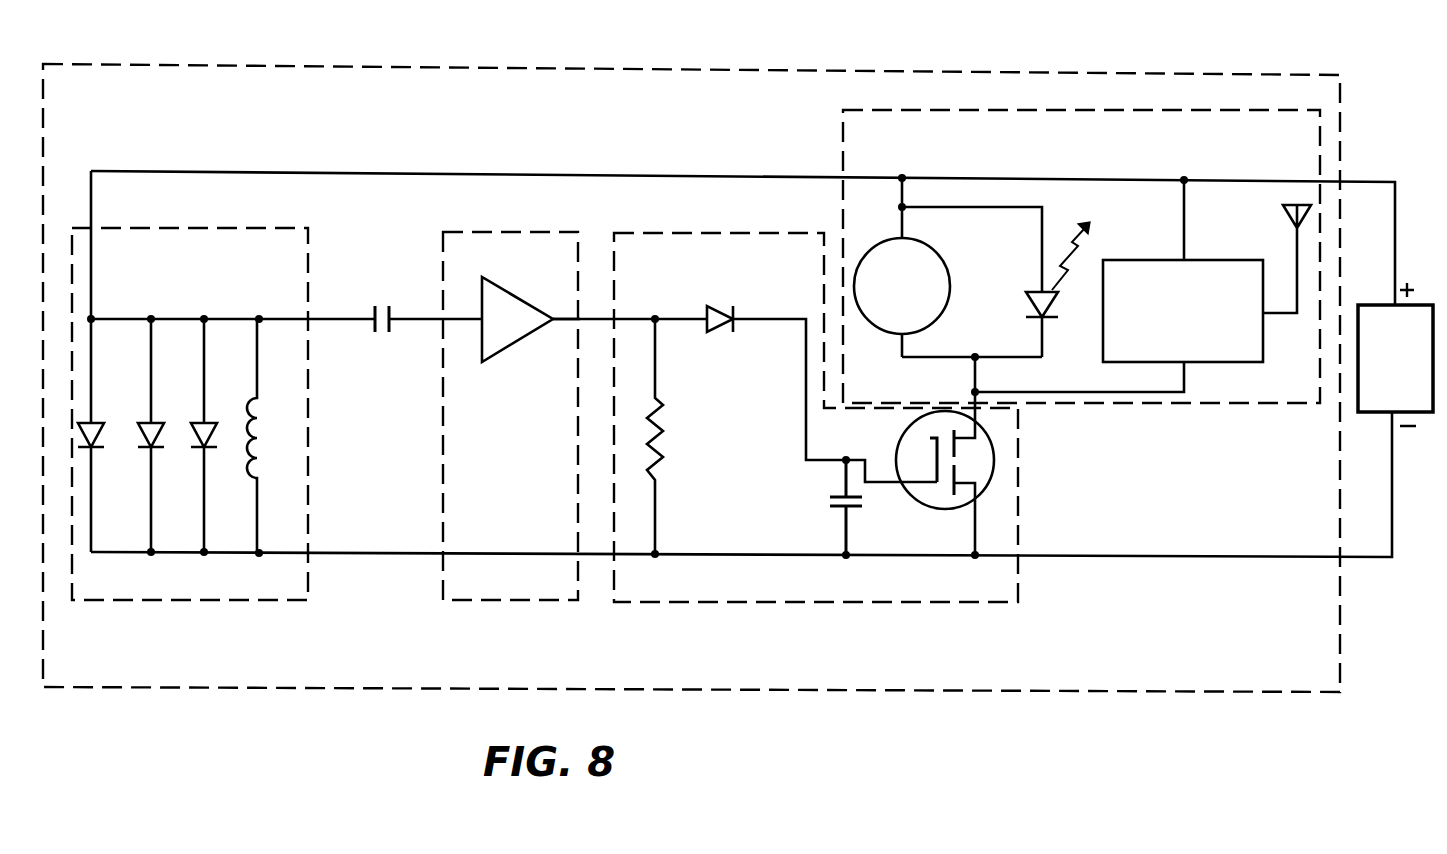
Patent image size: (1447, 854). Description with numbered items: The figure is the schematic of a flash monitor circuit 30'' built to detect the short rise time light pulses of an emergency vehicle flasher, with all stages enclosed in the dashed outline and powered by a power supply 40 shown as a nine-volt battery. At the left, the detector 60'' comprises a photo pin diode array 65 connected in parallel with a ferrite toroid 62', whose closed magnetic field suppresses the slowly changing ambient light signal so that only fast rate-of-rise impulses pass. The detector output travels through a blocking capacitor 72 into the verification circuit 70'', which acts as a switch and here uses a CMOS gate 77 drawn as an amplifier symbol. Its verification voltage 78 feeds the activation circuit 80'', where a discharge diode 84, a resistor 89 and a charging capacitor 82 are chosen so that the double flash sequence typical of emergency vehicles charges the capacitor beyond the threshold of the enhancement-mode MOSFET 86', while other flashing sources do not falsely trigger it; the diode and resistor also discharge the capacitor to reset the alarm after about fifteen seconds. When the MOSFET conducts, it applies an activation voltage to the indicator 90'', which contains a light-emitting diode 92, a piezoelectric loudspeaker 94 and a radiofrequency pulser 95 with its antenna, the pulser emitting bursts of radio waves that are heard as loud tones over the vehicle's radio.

The transmitter housing / overall circuit 30'' is at (691, 357).
The detector 60'' is at (190, 397).
The ferrite toroid 62' is at (274, 435).
The photo pin diode array 65 is at (268, 556).
The verification circuit 70'' is at (511, 394).
The blocking capacitor 72 is at (386, 300).
The CMOS gate 77 is at (520, 345).
The verification voltage 78 is at (578, 318).
The activation circuit 80'' is at (816, 395).
The capacitor C3 82 is at (830, 500).
The discharge diode 84 is at (716, 333).
The enhancement-mode MOSFET 86' is at (930, 456).
The resistor 89 is at (690, 444).
The indicator 90'' is at (1056, 254).
The light-emitting diode 92 is at (1026, 298).
The piezoelectric loudspeaker 94 is at (944, 266).
The radiofrequency pulser 95 is at (1203, 262).
The power supply 40 is at (1376, 305).